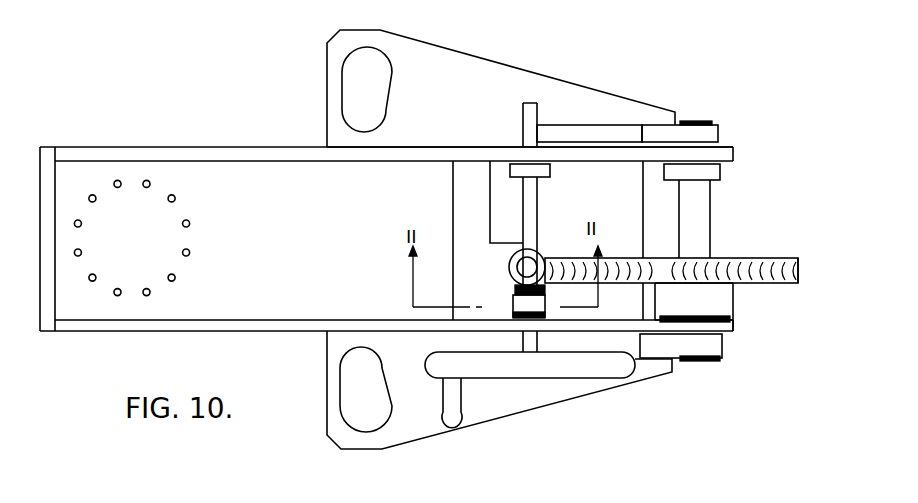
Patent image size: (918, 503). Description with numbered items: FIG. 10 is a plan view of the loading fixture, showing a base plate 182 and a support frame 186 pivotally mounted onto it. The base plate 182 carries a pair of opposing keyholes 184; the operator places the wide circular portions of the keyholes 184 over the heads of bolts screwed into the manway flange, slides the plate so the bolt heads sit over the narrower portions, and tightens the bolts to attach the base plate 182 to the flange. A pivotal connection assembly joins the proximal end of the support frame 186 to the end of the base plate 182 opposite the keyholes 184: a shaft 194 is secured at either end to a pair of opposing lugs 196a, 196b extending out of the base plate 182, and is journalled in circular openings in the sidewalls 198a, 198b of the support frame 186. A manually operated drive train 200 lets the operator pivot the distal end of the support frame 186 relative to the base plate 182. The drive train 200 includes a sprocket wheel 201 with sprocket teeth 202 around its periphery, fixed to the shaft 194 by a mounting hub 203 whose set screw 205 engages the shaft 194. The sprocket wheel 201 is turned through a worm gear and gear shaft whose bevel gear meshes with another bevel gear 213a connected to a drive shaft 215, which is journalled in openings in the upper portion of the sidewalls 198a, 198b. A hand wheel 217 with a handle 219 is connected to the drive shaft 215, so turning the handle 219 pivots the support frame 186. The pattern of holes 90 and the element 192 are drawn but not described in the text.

The holes 90 is at (189, 227).
The base plate 182 is at (507, 58).
The keyholes 184 is at (342, 76).
The support frame 186 is at (182, 140).
The stop 192 is at (724, 114).
The shaft 194 is at (698, 198).
The lug 196a is at (578, 137).
The lug 196b is at (678, 358).
The sidewall 198a is at (268, 140).
The sidewall 198b is at (308, 340).
The drive train 200 is at (503, 269).
The sprocket wheel 201 is at (760, 258).
The sprocket teeth 202 is at (796, 273).
The mounting hub 203 is at (697, 302).
The set screw 205 is at (735, 312).
The bevel gear 213a is at (512, 292).
The drive shaft 215 is at (537, 198).
The hand wheel 217 is at (598, 367).
The handle 219 is at (453, 417).